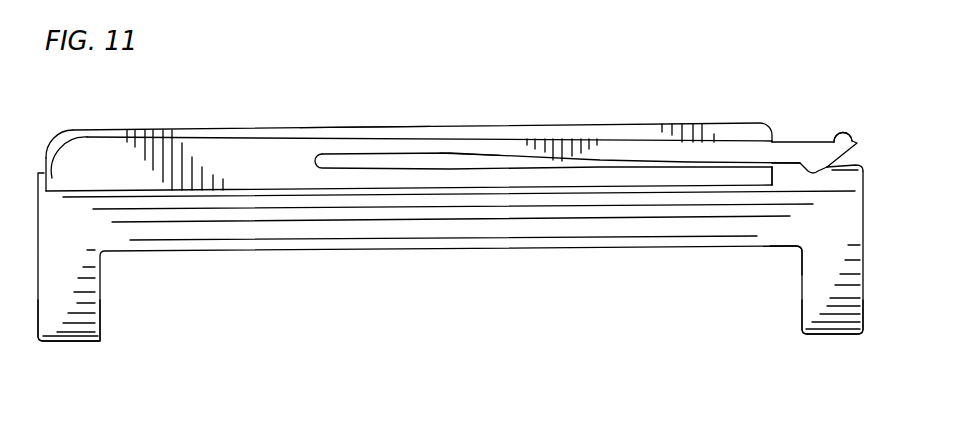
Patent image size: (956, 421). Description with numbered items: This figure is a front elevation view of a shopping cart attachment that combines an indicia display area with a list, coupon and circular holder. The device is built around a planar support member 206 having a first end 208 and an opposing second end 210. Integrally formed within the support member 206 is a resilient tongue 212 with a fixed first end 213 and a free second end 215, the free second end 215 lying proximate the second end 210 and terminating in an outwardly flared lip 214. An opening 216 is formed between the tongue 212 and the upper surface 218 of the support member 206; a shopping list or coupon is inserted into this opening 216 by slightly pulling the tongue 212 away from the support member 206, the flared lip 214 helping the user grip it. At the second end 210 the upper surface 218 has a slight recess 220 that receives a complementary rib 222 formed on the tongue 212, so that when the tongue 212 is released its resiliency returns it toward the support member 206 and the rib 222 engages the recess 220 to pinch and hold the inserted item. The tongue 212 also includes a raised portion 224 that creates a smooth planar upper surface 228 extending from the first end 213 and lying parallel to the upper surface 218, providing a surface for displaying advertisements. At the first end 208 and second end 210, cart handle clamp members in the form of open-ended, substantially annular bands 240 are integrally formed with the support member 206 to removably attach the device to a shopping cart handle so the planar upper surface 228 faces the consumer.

The support member 206 is at (420, 235).
The first end 208 is at (101, 254).
The second end 210 is at (800, 248).
The tongue 212 is at (752, 120).
The fixed first end 213 is at (68, 139).
The outwardly flared lip 214 is at (841, 130).
The free second end 215 is at (855, 142).
The opening 216 is at (386, 162).
The upper surface 218 is at (468, 170).
The recess 220 is at (807, 170).
The rib 222 is at (815, 170).
The raised portion 224 is at (708, 136).
The planar upper surface 228 is at (364, 128).
The annular bands 240 is at (73, 318).